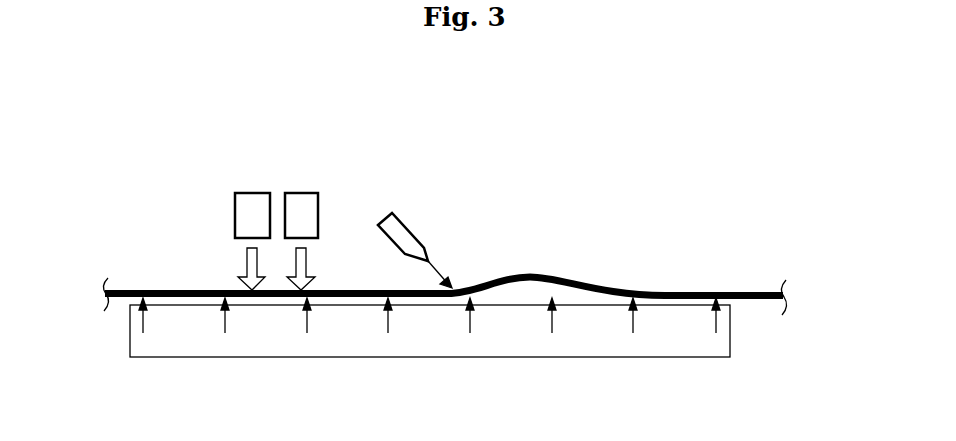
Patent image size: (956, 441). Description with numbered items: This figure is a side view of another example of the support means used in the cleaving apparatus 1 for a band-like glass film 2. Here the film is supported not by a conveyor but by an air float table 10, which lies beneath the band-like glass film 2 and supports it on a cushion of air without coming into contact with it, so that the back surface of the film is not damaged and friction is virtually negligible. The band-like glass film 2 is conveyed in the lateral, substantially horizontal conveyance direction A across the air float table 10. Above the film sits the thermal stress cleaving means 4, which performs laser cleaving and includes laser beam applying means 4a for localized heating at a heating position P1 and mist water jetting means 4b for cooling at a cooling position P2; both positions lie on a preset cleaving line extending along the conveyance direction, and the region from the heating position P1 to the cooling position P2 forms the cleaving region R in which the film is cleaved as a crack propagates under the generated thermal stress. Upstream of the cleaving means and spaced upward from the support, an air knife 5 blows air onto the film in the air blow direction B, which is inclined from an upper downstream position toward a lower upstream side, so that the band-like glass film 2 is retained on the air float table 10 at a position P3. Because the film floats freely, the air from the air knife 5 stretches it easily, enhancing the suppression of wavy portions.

The cleaving apparatus 1 is at (577, 197).
The band-like glass film 2 is at (758, 306).
The thermal stress cleaving means 4 is at (276, 189).
The laser beam applying means 4a is at (301, 212).
The mist water jetting means 4b is at (252, 192).
The air knife 5 is at (405, 223).
The air float table 10 is at (584, 357).
The heating position P1 is at (303, 289).
The cooling position P2 is at (250, 289).
The retaining position P3 is at (453, 288).
The air blow direction B is at (438, 272).
The cleaving region R is at (252, 300).
The conveyance direction A is at (668, 257).